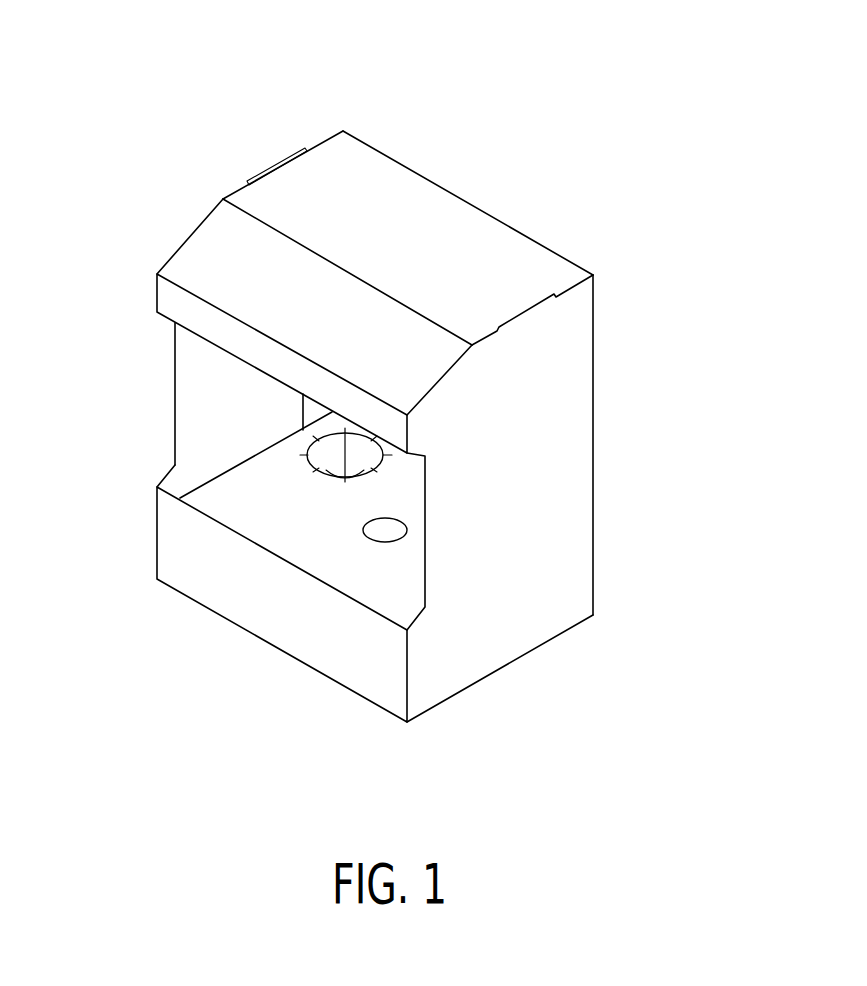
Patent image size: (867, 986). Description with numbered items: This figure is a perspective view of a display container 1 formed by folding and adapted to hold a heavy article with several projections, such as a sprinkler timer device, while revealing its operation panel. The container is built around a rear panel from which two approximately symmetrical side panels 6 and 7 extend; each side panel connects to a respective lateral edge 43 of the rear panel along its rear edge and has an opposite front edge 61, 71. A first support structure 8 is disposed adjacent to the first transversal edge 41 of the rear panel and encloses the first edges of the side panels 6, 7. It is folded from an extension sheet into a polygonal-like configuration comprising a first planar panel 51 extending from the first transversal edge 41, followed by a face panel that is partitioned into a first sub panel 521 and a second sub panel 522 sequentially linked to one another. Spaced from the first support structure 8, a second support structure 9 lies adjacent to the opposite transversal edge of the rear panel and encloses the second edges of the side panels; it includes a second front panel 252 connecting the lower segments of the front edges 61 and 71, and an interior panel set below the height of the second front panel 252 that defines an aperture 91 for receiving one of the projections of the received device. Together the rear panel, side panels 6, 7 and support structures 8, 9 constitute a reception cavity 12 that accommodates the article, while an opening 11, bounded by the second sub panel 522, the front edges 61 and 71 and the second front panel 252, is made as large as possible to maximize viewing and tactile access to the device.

The display container 1 is at (541, 98).
The first support structure 8 is at (163, 243).
The first planar panel 51 is at (332, 158).
The first transversal edge 41 is at (455, 195).
The first sub panel 521 is at (218, 237).
The second sub panel 522 is at (165, 292).
The side panel 6 is at (565, 480).
The lateral edge 43 is at (597, 400).
The side panel 7 is at (207, 395).
The front edge 71 is at (175, 363).
The reception cavity 12 is at (213, 424).
The opening 11 is at (170, 452).
The second support structure 9 is at (152, 552).
The second front panel 252 is at (327, 648).
The front edge 61 is at (425, 553).
The aperture 91 is at (308, 470).